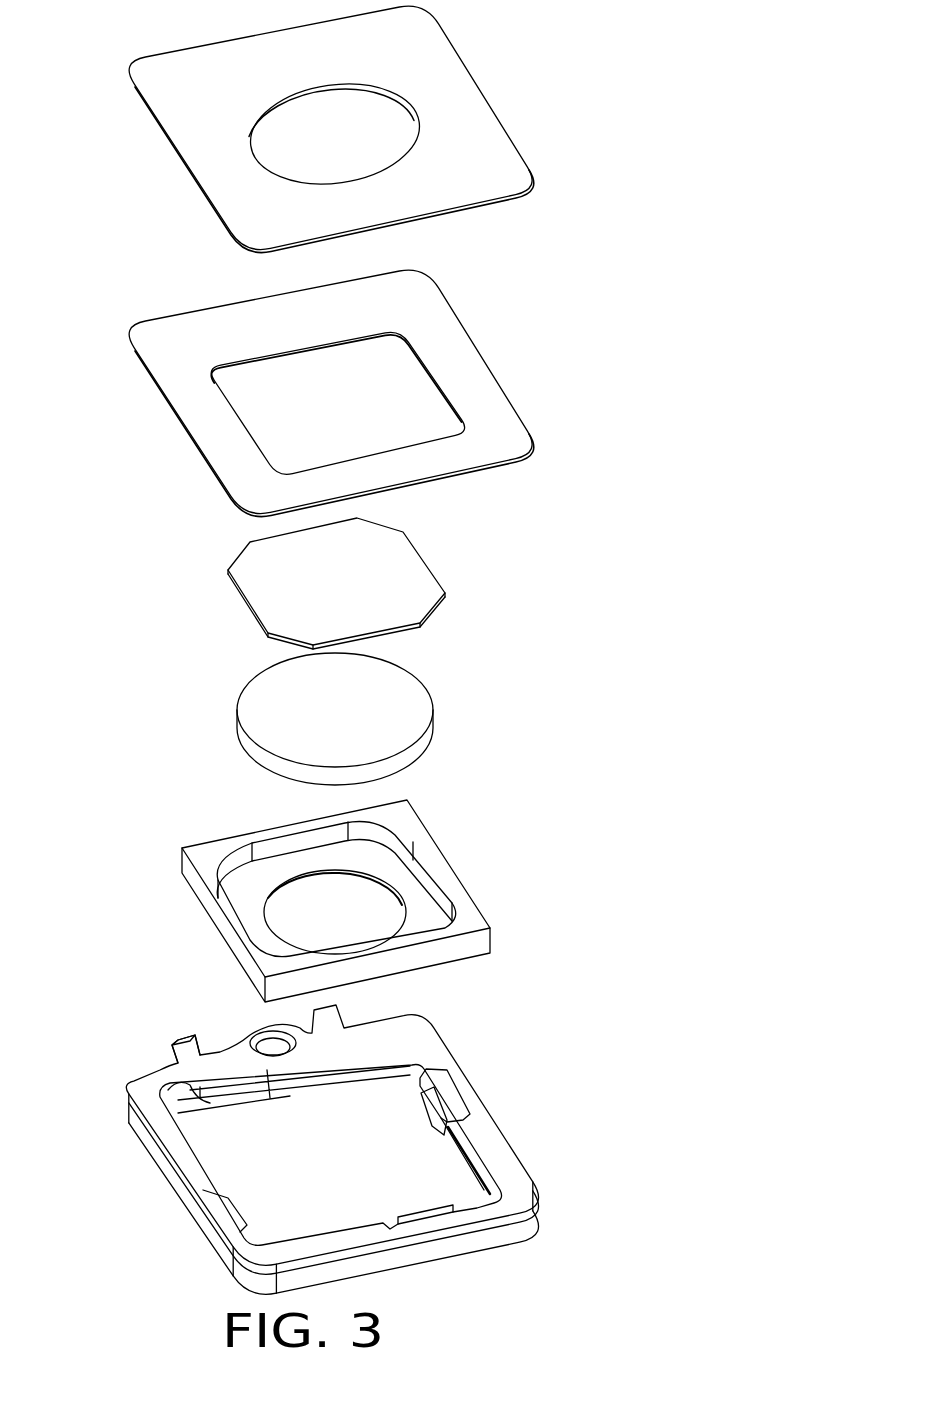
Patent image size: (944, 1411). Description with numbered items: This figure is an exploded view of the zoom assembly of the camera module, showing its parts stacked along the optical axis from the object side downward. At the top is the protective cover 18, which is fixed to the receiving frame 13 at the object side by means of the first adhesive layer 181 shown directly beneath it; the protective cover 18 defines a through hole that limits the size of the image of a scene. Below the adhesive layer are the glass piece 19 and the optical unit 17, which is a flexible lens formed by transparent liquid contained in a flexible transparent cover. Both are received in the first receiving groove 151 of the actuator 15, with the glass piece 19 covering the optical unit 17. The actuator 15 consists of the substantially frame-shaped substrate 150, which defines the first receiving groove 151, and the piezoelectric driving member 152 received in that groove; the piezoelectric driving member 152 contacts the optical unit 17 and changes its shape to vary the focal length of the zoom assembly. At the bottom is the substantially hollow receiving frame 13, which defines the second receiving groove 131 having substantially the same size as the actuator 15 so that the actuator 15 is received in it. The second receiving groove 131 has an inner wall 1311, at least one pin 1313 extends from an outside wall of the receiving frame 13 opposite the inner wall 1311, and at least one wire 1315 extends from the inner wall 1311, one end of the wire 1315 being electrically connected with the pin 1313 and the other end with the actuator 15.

The protective cover 18 is at (487, 147).
The first adhesive layer 181 is at (500, 427).
The glass piece 19 is at (417, 575).
The optical unit 17 is at (415, 698).
The actuator 15 is at (319, 884).
The substrate 150 is at (205, 853).
The first receiving groove 151 is at (382, 898).
The piezoelectric driving member 152 is at (295, 845).
The receiving frame 13 is at (340, 1146).
The second receiving groove 131 is at (450, 1178).
The inner wall 1311 is at (263, 1105).
The pin 1313 is at (183, 1043).
The wire 1315 is at (407, 1068).